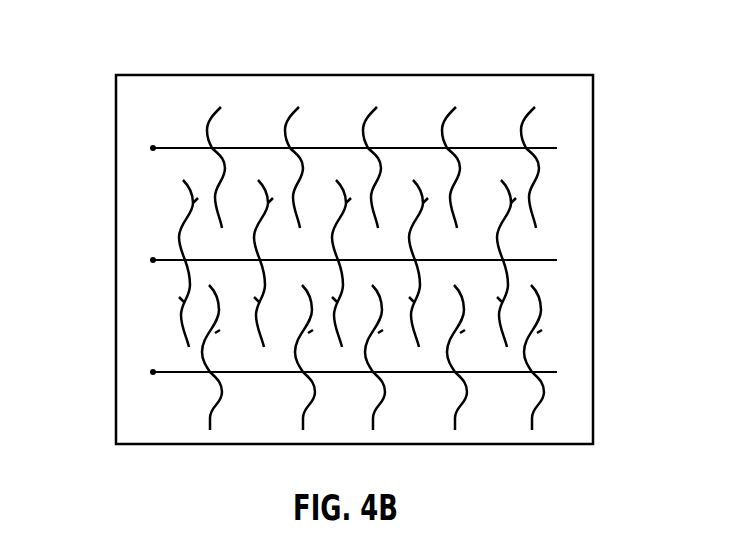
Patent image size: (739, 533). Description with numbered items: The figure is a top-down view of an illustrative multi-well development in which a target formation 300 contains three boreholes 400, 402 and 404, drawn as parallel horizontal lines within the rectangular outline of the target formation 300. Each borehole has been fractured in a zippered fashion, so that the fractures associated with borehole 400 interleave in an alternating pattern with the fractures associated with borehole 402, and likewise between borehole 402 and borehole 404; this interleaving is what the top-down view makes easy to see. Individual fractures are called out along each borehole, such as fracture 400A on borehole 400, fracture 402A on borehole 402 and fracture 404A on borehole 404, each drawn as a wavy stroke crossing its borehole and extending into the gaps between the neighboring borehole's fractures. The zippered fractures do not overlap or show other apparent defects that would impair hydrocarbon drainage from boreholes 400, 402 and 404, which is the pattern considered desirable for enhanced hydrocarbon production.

The target formation 300 is at (133, 47).
The borehole 400 is at (151, 152).
The borehole 402 is at (151, 257).
The borehole 404 is at (151, 369).
The fiber strand of first line 400A is at (220, 116).
The fiber strand of second line 402A is at (502, 253).
The fiber strand of third line 404A is at (523, 355).